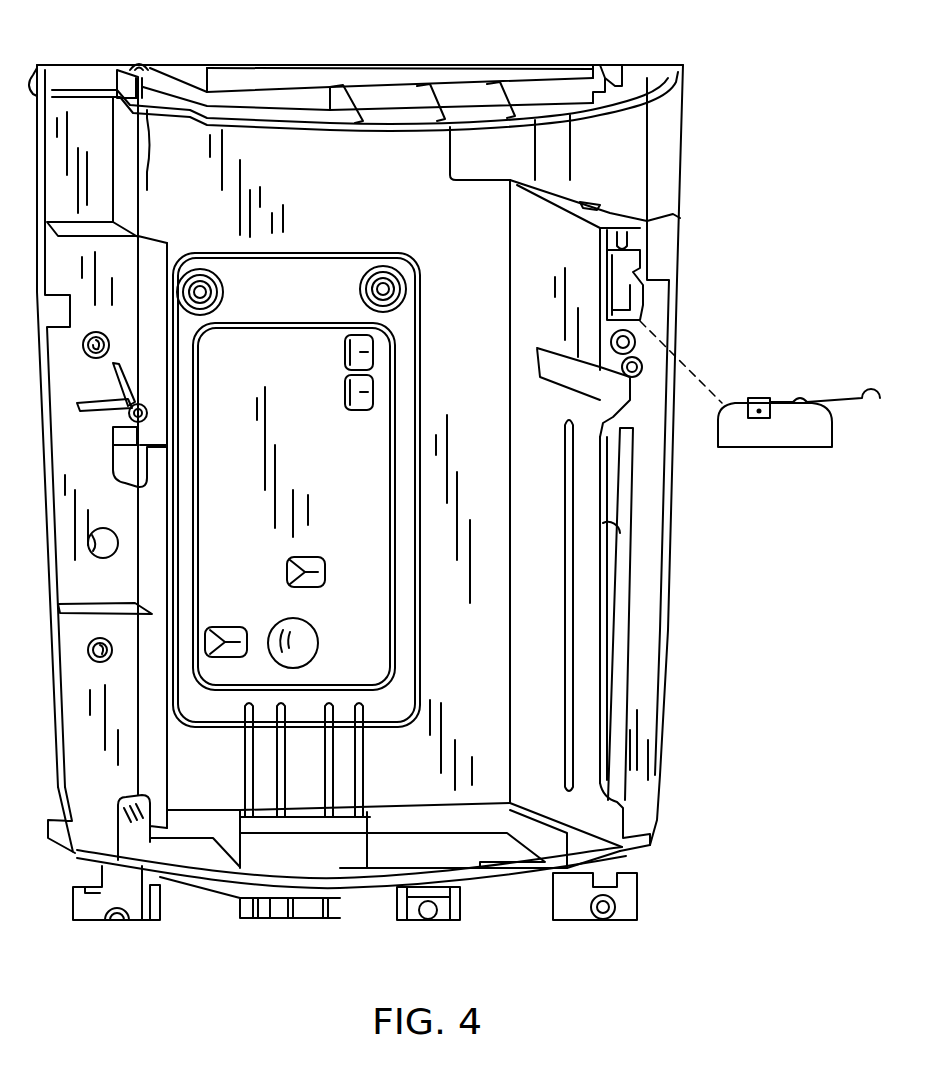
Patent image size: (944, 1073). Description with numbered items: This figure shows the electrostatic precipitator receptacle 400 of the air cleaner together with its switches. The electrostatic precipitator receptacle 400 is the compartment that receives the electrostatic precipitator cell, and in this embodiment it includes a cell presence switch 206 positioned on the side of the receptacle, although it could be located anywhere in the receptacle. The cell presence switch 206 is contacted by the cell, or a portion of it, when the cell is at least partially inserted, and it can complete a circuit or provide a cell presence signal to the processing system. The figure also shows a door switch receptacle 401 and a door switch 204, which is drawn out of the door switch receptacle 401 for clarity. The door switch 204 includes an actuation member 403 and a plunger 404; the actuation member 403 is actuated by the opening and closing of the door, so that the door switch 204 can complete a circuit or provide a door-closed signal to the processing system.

The electrostatic precipitator receptacle 400 is at (487, 567).
The cell presence switch 206 is at (683, 200).
The door switch receptacle 401 is at (627, 307).
The door switch 204 is at (767, 452).
The actuation member 403 is at (868, 390).
The plunger 404 is at (820, 401).